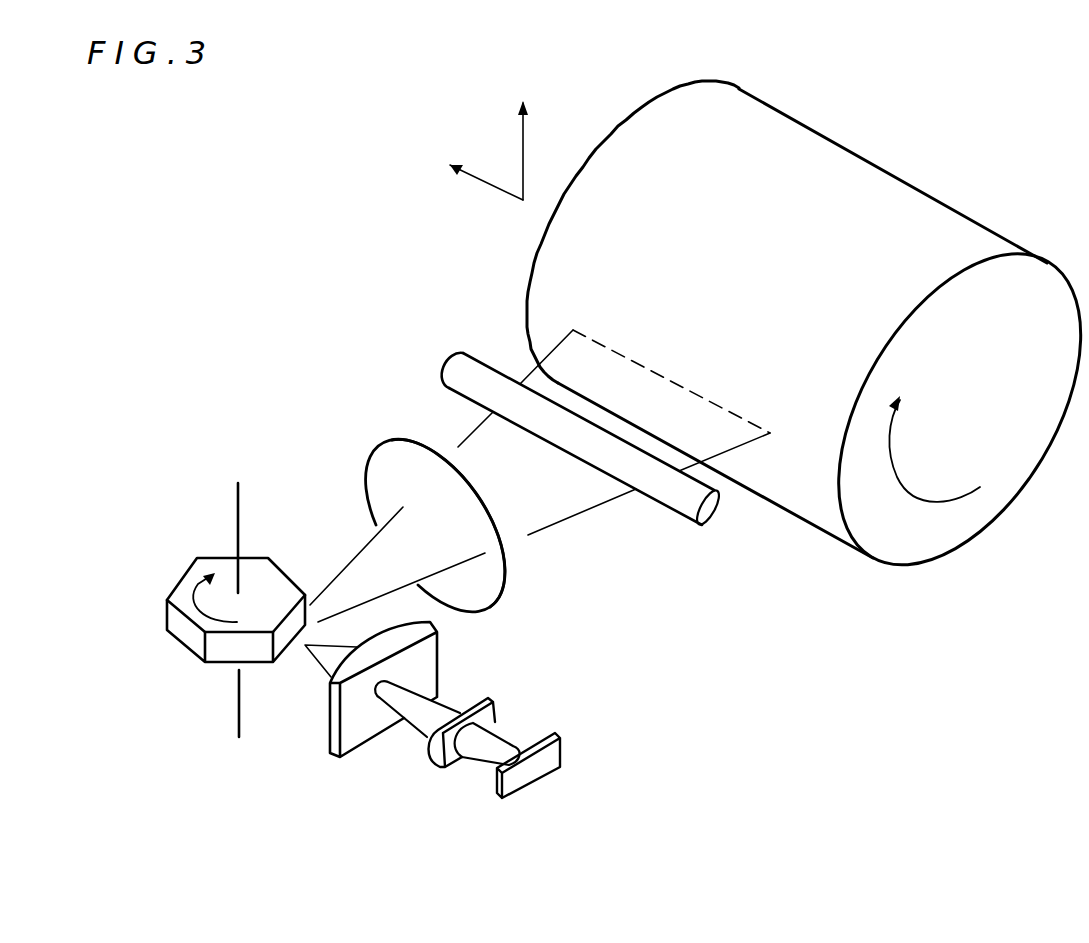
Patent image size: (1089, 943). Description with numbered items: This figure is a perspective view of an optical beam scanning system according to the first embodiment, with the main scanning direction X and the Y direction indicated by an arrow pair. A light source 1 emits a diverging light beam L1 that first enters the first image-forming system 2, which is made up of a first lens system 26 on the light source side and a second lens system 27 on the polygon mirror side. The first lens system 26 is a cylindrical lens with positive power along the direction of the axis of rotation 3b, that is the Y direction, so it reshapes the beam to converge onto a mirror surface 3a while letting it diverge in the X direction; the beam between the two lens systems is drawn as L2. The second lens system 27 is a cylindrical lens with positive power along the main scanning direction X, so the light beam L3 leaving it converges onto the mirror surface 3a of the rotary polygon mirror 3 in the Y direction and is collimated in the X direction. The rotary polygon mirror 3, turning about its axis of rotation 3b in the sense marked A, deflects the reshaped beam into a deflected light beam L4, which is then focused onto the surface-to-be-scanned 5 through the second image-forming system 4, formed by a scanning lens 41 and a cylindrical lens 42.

The light source 1 is at (495, 792).
The first image-forming system 2 is at (365, 845).
The rotary polygon mirror 3 is at (193, 638).
The mirror surface 3a is at (285, 635).
The axis of rotation 3b is at (238, 483).
The second image-forming system 4 is at (389, 284).
The surface-to-be-scanned 5 is at (813, 502).
The first lens system 26 is at (432, 753).
The second lens system 27 is at (330, 742).
The scanning lens 41 is at (382, 473).
The cylindrical lens 42 is at (462, 373).
The rotation direction of polygon mirror A is at (215, 597).
The diverging light beam L1 is at (500, 740).
The collimated light beam L2 is at (440, 702).
The light beam L3 is at (320, 650).
The deflected light beam L4 is at (340, 568).
The main scanning direction X is at (471, 173).
The Y direction Y is at (521, 136).